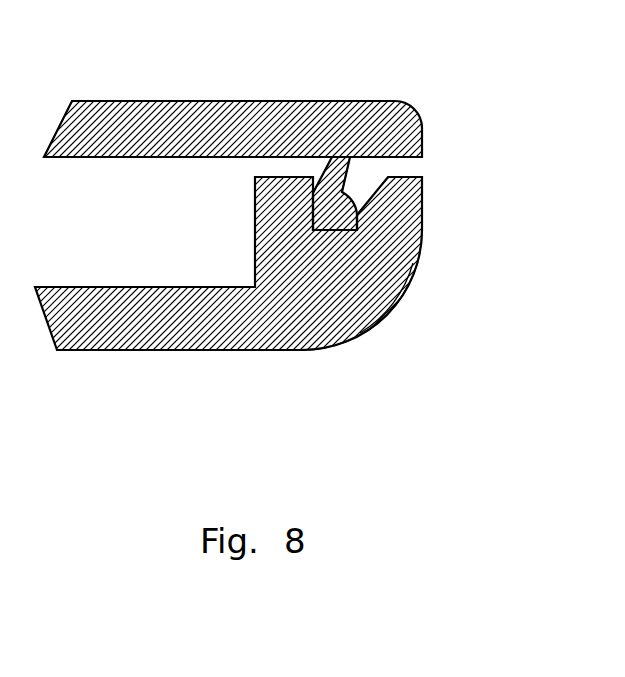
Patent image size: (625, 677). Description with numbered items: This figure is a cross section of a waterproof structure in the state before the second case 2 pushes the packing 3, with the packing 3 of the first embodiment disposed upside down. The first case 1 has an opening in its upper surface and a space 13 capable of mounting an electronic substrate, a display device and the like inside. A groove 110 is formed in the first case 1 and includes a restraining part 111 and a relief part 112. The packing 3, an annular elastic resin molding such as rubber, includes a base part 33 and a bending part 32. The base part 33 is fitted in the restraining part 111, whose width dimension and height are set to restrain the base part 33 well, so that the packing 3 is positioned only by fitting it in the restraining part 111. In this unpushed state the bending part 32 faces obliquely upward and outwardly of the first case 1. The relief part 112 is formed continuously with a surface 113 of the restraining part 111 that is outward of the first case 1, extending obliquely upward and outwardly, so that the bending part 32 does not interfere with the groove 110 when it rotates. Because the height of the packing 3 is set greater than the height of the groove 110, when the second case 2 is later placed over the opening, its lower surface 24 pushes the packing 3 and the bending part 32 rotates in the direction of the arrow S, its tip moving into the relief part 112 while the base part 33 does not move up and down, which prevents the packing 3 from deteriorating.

The first case 1 is at (160, 351).
The second case 2 is at (162, 100).
The packing 3 is at (315, 198).
The space 13 is at (120, 274).
The lower surface 24 is at (123, 158).
The bending part 32 is at (347, 170).
The base part 33 is at (318, 216).
The groove 110 is at (341, 232).
The restraining part 111 is at (392, 302).
The relief part 112 is at (422, 218).
The surface 113 is at (416, 266).
The arrow S is at (380, 57).